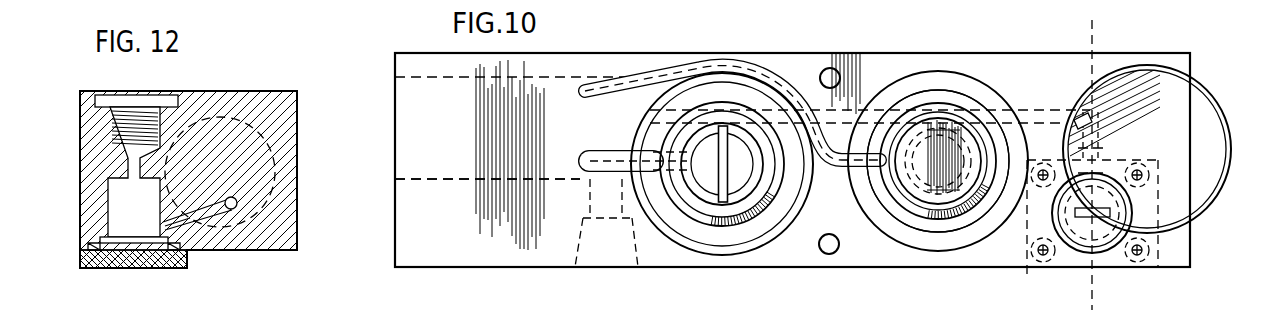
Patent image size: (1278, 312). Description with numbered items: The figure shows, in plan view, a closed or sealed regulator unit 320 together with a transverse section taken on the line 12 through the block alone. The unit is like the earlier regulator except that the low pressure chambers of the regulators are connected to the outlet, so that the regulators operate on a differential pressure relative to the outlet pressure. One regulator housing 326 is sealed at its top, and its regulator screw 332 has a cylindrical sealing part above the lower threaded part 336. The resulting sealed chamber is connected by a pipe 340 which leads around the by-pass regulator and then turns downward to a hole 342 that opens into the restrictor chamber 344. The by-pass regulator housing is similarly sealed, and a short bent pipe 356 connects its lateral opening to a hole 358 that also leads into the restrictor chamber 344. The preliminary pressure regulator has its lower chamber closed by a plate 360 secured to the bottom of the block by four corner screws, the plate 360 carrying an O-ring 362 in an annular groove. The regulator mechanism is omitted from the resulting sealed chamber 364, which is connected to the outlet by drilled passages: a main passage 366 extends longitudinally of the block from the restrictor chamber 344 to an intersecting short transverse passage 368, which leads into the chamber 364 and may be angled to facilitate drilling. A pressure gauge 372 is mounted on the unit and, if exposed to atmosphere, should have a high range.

In FIG. 10, the section line 12 is at (1092, 308).
In FIG. 10, the regulator unit 320 is at (768, 271).
In FIG. 10, the housing 326 is at (923, 232).
In FIG. 10, the regulator screw 332 is at (880, 193).
In FIG. 10, the lower threaded part 336 is at (722, 232).
In FIG. 10, the pipe 340 is at (840, 192).
In FIG. 10, the hole 342 is at (592, 106).
In FIG. 12, the restrictor chamber 344 is at (278, 146).
In FIG. 10, the restrictor chamber 344 is at (388, 184).
In FIG. 10, the short bent pipe 356 is at (613, 149).
In FIG. 10, the hole 358 is at (584, 195).
In FIG. 12, the plate 360 is at (150, 268).
In FIG. 10, the plate 360 is at (1027, 262).
In FIG. 12, the O-ring 362 is at (80, 260).
In FIG. 12, the sealed chamber 364 is at (150, 222).
In FIG. 12, the main passage 366 is at (245, 236).
In FIG. 10, the main passage 366 is at (1037, 111).
In FIG. 12, the short transverse passage 368 is at (197, 246).
In FIG. 10, the short transverse passage 368 is at (1100, 143).
In FIG. 10, the pressure gauge 372 is at (1211, 101).